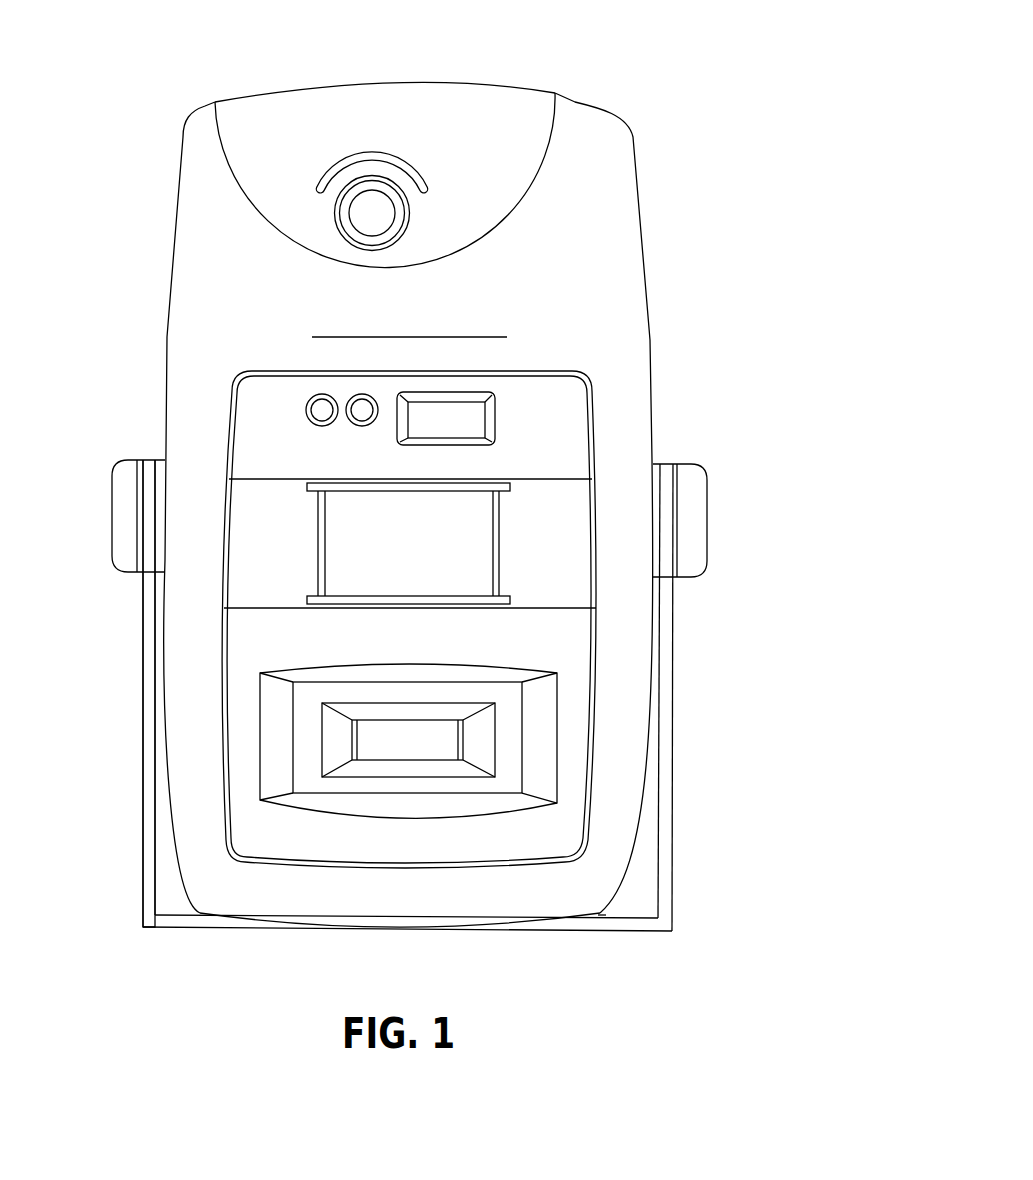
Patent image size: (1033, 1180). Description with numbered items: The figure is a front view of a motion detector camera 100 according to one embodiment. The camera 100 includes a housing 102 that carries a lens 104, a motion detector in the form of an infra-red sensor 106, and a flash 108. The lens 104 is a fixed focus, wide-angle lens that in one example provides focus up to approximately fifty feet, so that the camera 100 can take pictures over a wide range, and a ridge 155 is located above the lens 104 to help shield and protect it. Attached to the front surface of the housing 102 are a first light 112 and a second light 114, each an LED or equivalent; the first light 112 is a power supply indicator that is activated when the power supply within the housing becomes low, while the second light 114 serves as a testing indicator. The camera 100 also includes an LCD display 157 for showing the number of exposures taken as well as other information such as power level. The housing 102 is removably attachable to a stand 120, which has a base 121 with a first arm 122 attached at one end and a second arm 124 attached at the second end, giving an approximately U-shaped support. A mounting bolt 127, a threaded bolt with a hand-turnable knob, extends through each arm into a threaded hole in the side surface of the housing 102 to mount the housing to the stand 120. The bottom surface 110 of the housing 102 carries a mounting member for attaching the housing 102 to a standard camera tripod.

The motion detector camera 100 is at (640, 87).
The housing 102 is at (650, 396).
The lens 104 is at (383, 213).
The infra-red sensor 106 is at (493, 545).
The flash 108 is at (480, 727).
The bottom surface 110 is at (401, 932).
The first light 112 is at (167, 386).
The second light 114 is at (362, 420).
The stand 120 is at (144, 864).
The base 121 is at (605, 917).
The first arm 122 is at (143, 696).
The second arm 124 is at (675, 698).
The mounting bolt 127 is at (112, 520).
The ridge 155 is at (406, 163).
The LCD display 157 is at (460, 417).